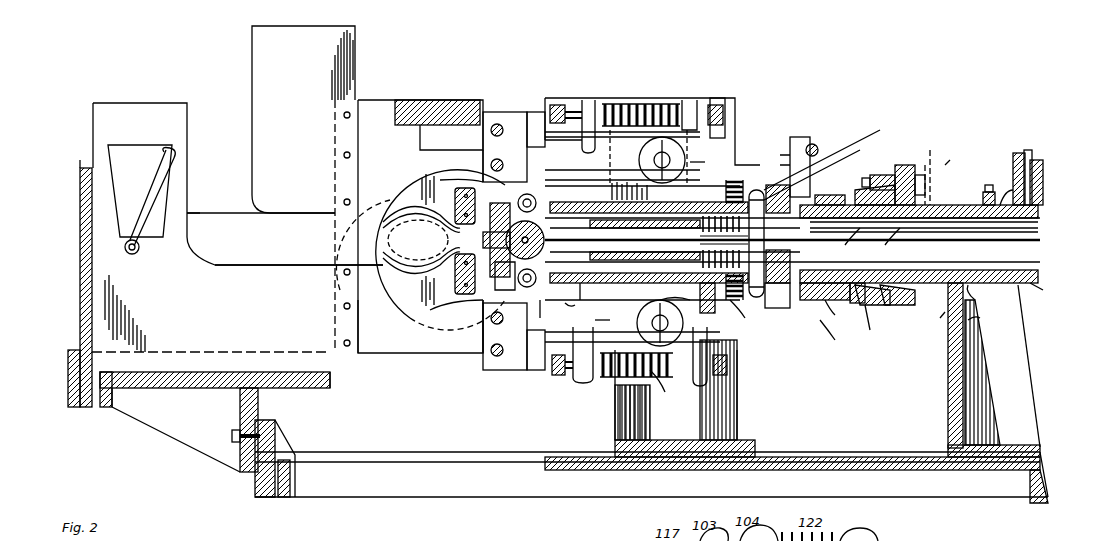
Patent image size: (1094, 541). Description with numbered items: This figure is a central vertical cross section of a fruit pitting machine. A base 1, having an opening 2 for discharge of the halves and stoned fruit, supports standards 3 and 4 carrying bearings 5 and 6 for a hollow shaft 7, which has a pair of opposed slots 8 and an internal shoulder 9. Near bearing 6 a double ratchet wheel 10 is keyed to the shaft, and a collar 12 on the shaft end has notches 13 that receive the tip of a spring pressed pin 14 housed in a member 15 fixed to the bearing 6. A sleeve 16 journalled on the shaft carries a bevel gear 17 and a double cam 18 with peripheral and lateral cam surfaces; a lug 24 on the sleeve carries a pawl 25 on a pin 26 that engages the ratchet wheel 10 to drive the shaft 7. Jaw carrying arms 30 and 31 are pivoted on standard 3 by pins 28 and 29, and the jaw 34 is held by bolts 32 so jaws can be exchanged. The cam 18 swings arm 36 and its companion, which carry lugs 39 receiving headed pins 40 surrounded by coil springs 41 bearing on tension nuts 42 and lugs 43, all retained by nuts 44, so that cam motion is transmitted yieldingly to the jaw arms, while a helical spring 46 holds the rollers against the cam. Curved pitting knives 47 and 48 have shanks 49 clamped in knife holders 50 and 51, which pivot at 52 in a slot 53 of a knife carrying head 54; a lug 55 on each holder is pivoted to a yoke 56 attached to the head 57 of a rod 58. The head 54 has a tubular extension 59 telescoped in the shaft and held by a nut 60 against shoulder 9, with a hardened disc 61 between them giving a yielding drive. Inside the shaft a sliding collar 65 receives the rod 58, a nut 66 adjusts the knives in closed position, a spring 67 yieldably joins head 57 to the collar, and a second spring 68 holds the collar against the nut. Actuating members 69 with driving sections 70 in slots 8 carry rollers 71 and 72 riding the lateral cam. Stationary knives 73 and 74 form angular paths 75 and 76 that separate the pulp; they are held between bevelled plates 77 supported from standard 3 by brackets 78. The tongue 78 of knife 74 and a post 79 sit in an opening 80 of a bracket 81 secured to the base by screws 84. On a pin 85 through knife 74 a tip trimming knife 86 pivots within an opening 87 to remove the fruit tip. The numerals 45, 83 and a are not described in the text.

The base 1 is at (965, 477).
The opening 2 is at (300, 460).
The standard 3 is at (760, 382).
The standard 4 is at (1000, 370).
The bearing 5 is at (580, 290).
The bearing 6 is at (975, 190).
The hollow shaft 7 is at (1038, 235).
The slots 8 is at (805, 300).
The internal shoulder 9 is at (820, 255).
The double ratchet wheel 10 is at (910, 305).
The annular ring or collar 12 is at (979, 293).
The notches 13 is at (983, 320).
The spring pressed pin 14 is at (1043, 205).
The member 15 is at (1045, 132).
The sleeve 16 is at (838, 312).
The bevel gear 17 is at (874, 324).
The double cam 18 is at (800, 195).
The lug 24 is at (905, 160).
The pawl 25 is at (930, 175).
The pin 26 is at (886, 162).
The pin 28 is at (667, 386).
The pin 29 is at (750, 118).
The jaw carrying arm 30 is at (535, 370).
The jaw carrying arm 31 is at (535, 112).
The bolts 32 is at (488, 385).
The jaw 34 is at (455, 285).
The arm 36 is at (771, 308).
The lugs 39 is at (722, 85).
The elongated headed pins 40 is at (780, 342).
The coil springs 41 is at (650, 418).
The tension nuts 42 is at (600, 408).
The lugs 43 is at (565, 408).
The nuts 44 is at (555, 392).
The pin 45 is at (698, 160).
The helical spring 46 is at (682, 298).
The curved pitting knife 47 is at (420, 250).
The curved pitting knife 48 is at (408, 258).
The shanks 49 is at (455, 368).
The knife holder 50 is at (445, 165).
The knife holder 51 is at (440, 320).
The pivot 52 is at (530, 285).
The recess or slot 53 is at (455, 192).
The knife carrying head 54 is at (590, 158).
The lug 55 is at (512, 185).
The yoke 56 is at (543, 250).
The head 57 is at (815, 140).
The rod 58 is at (691, 319).
The tubular extension 59 is at (675, 250).
The nut 60 is at (710, 190).
The hardened steel disc or ring 61 is at (660, 241).
The sliding collar 65 is at (844, 237).
The nut 66 is at (885, 237).
The spring 67 is at (546, 309).
The second spring 68 is at (762, 190).
The actuating members 69 is at (840, 188).
The enlarged driving sections 70 is at (819, 240).
The roller 71 is at (739, 316).
The roller 72 is at (831, 154).
The stationary knife 73 is at (305, 189).
The stationary knife 74 is at (238, 184).
The path 75 is at (261, 175).
The path 76 is at (285, 239).
The plates 77 is at (370, 355).
The brackets 78 is at (100, 405).
The post 79 is at (80, 312).
The opening 80 is at (70, 410).
The bracket 81 is at (190, 400).
The flange 83 is at (325, 390).
The screws 84 is at (262, 425).
The pin 85 is at (138, 255).
The spike or tip trimming knife 86 is at (160, 200).
The opening 87 is at (140, 191).
The axis line a is at (952, 156).